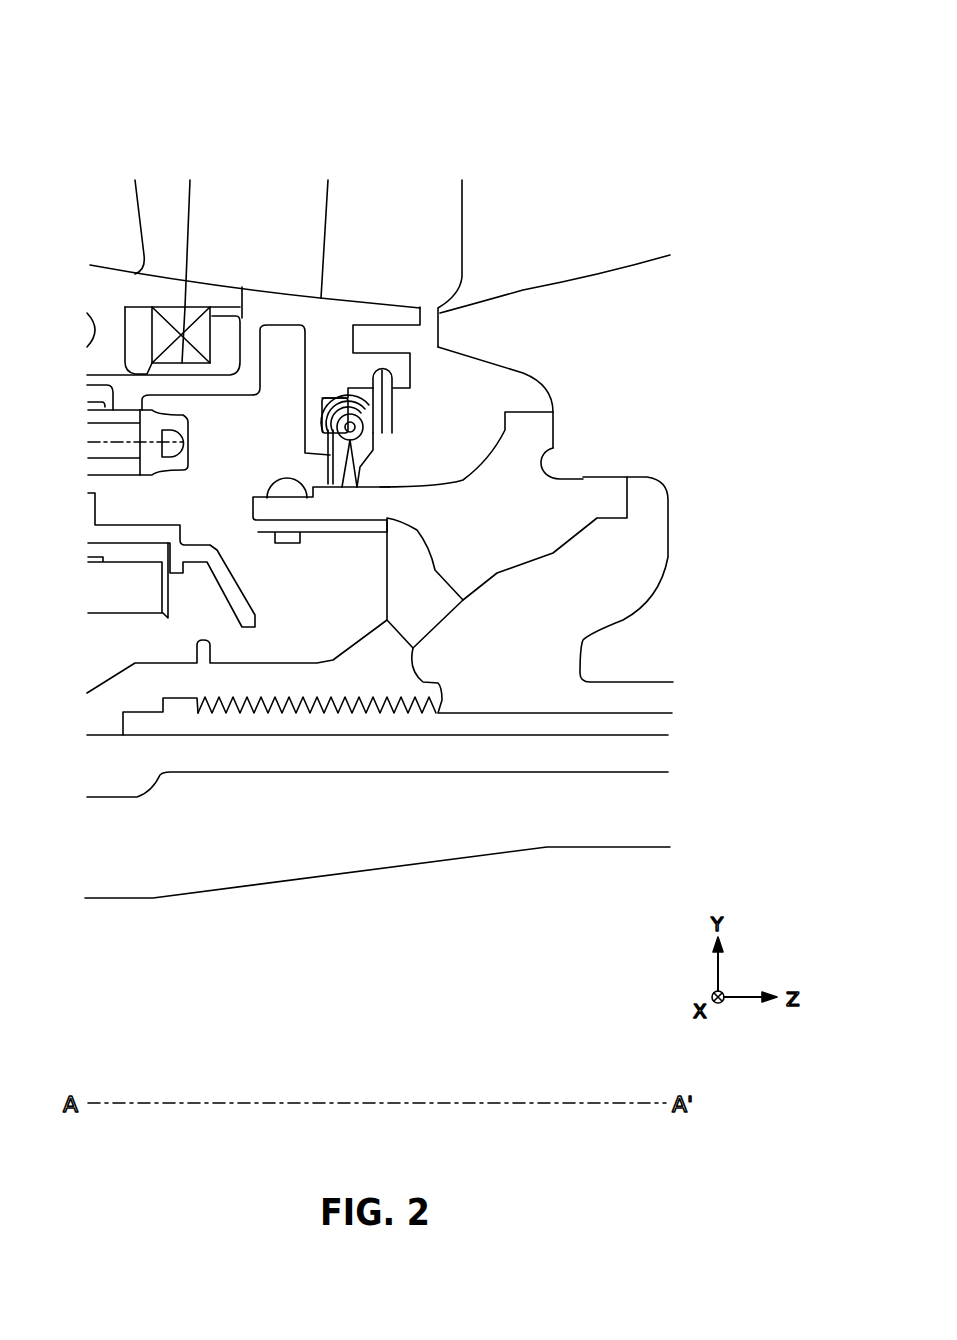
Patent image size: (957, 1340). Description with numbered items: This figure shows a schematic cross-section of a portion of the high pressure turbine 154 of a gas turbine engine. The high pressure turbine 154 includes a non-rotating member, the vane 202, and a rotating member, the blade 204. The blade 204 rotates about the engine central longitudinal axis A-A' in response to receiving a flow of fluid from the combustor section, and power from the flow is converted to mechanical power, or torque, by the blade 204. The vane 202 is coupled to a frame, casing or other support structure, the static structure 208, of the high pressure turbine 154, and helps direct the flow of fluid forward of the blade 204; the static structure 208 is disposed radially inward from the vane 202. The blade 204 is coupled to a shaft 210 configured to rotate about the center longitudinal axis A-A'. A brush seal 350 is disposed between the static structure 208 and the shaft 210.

The high pressure turbine 154 is at (142, 98).
The vane 202 is at (276, 251).
The blade 204 is at (514, 221).
The static structure 208 is at (322, 338).
The shaft 210 is at (536, 520).
The brush seal 350 is at (380, 450).